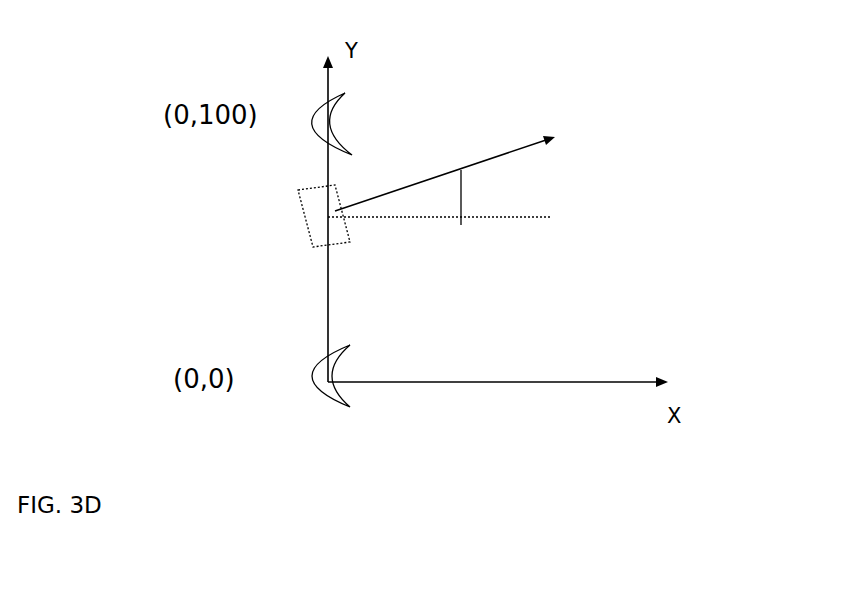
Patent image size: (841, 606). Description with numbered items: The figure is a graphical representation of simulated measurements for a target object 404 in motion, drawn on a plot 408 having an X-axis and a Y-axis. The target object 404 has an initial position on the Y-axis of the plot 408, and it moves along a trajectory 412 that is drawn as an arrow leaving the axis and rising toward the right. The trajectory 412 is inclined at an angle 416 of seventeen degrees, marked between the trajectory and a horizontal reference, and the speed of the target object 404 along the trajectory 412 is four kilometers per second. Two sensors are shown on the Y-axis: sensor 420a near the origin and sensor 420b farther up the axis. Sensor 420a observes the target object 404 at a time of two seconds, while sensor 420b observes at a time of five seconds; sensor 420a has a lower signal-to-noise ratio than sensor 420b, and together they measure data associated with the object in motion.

The target object 404 is at (335, 211).
The plot 408 is at (642, 180).
The trajectory 412 is at (502, 151).
The angle 416 is at (463, 195).
The sensor 420a is at (350, 407).
The sensor 420b is at (345, 93).